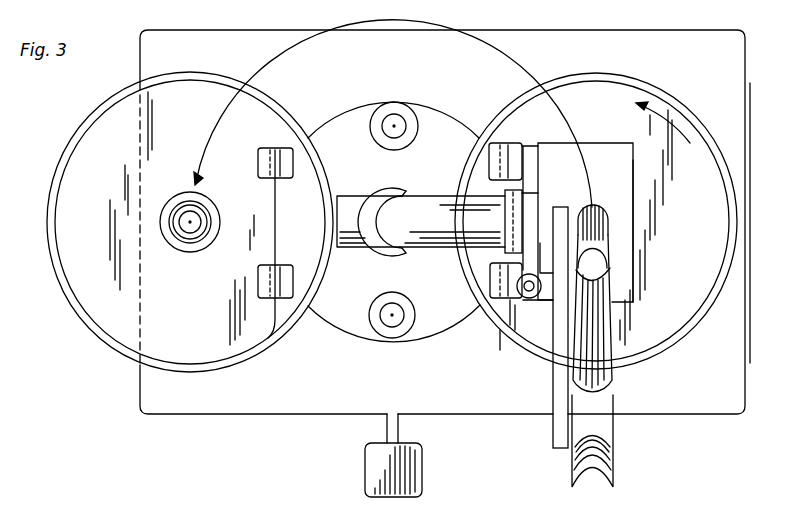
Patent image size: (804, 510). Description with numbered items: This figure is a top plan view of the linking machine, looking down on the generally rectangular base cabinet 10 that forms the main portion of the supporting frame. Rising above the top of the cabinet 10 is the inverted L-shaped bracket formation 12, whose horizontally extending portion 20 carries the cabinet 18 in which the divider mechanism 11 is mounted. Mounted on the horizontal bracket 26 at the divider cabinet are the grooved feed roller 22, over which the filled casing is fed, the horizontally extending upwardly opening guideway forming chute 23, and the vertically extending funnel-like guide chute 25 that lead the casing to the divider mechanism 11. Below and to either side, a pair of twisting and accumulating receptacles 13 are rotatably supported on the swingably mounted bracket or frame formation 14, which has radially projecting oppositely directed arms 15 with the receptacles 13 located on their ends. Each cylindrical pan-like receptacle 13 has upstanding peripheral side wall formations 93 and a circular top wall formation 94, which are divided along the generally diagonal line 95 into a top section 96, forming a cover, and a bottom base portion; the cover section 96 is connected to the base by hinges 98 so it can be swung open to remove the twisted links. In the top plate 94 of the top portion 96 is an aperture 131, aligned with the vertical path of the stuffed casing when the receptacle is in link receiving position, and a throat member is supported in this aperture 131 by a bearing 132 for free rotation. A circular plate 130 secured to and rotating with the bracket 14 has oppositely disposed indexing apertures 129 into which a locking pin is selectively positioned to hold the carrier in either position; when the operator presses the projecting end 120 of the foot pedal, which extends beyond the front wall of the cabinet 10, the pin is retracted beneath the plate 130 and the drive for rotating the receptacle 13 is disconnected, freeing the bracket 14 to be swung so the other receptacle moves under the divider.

The base cabinet 10 is at (716, 63).
The divider mechanism 11 is at (636, 221).
The inverted L-shaped bracket formation 12 is at (398, 250).
The twisting and accumulating receptacle 13 is at (676, 326).
The swingably mounted bracket or frame formation 14 is at (354, 196).
The radially projecting arm 15 is at (349, 243).
The cabinet 18 is at (601, 153).
The horizontally extending portion 20 is at (430, 200).
The grooved feed roller 22 is at (616, 451).
The guideway forming chute 23 is at (600, 320).
The funnel-like guide chute 25 is at (592, 212).
The horizontal bracket 26 is at (553, 383).
The peripheral side wall formation 93 is at (306, 286).
The top wall formation 94 is at (102, 236).
The dividing line 95 is at (268, 338).
The top section 96 is at (72, 156).
The hinge 98 is at (280, 165).
The foot pedal end 120 is at (372, 470).
The indexing aperture 129 is at (394, 124).
The circular plate 130 is at (441, 326).
The aperture 131 is at (188, 244).
The bearing 132 is at (199, 236).